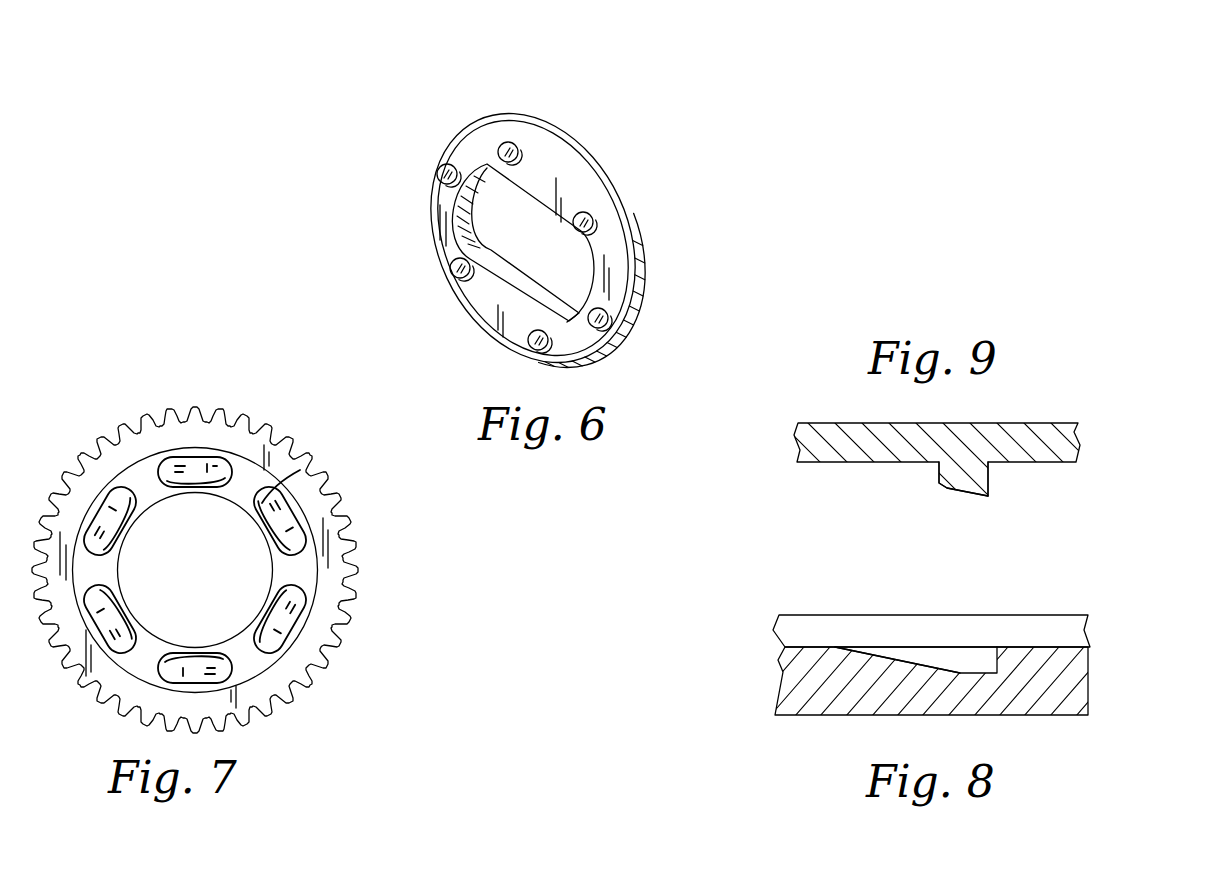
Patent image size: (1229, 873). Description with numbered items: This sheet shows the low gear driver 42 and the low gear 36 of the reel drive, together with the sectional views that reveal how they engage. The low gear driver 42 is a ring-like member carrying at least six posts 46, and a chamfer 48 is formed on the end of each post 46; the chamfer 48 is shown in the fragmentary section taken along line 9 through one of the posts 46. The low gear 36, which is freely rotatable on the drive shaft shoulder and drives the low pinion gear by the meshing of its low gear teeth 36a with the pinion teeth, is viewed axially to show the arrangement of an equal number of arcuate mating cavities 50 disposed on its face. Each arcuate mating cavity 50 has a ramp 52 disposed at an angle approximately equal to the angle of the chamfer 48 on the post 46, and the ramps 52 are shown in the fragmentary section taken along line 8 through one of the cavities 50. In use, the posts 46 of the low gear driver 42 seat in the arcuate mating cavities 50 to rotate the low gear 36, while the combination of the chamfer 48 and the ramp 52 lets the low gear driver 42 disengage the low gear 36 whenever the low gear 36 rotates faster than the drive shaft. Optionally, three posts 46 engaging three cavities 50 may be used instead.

In FIG. 6, the low gear driver 42 is at (650, 198).
In FIG. 9, the low gear driver 42 is at (1057, 427).
In FIG. 6, the post 46 is at (437, 173).
In FIG. 9, the post 46 is at (989, 481).
In FIG. 6, the chamfer 48 is at (450, 272).
In FIG. 9, the chamfer 48 is at (962, 489).
In FIG. 7, the low gear 36 is at (253, 577).
In FIG. 8, the low gear 36 is at (1088, 693).
In FIG. 7, the low gear teeth 36a is at (312, 683).
In FIG. 7, the arcuate mating cavity 50 is at (293, 518).
In FIG. 8, the arcuate mating cavity 50 is at (1000, 664).
In FIG. 7, the ramp 52 is at (265, 500).
In FIG. 8, the ramp 52 is at (912, 662).
In FIG. 7, the section line 8— 8 is at (155, 472).
In FIG. 6, the section line 9— 9 is at (490, 133).